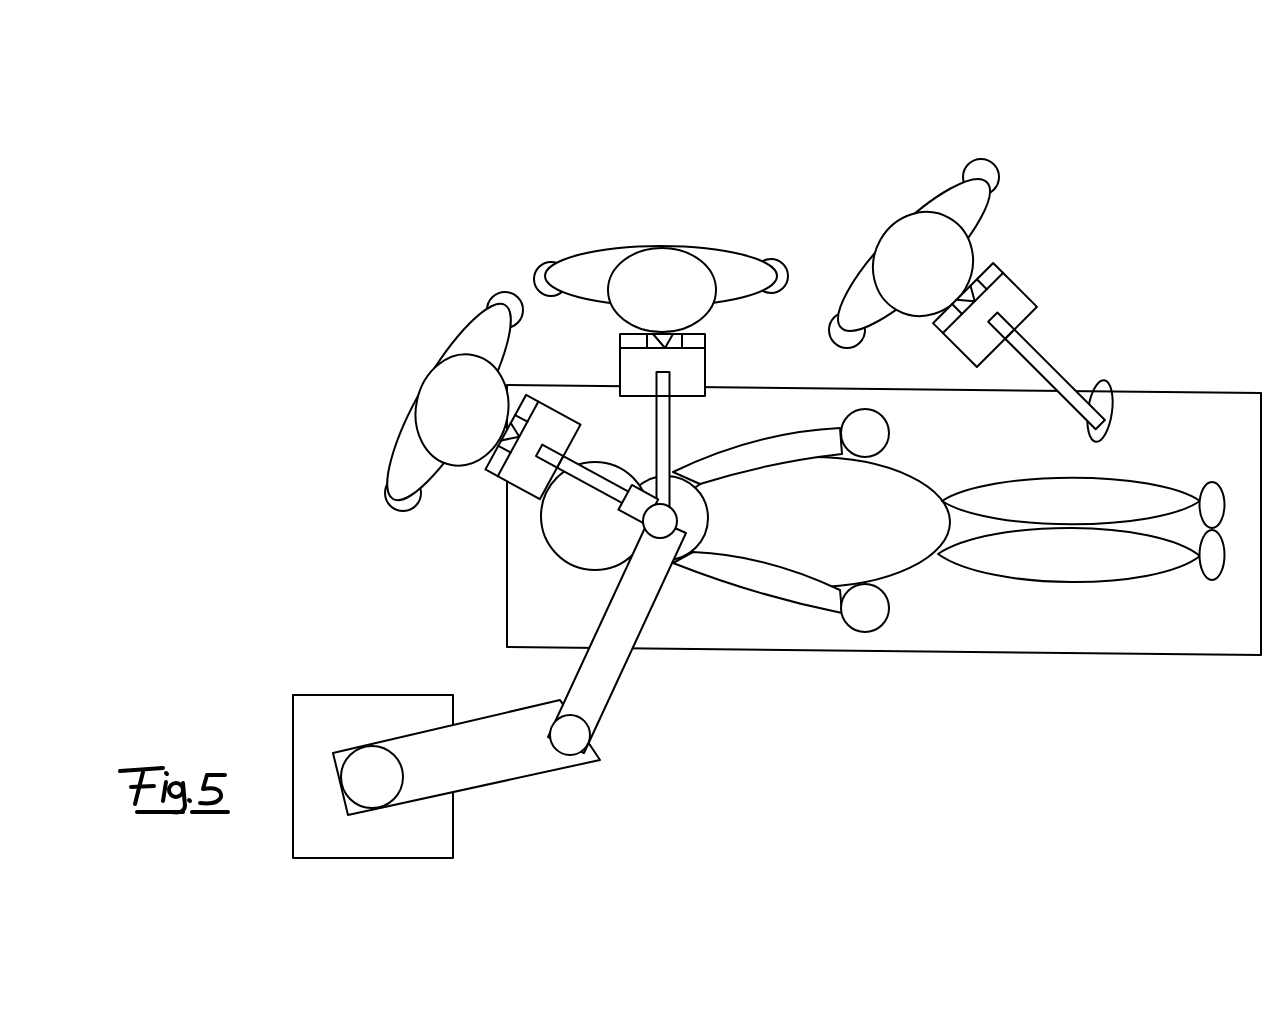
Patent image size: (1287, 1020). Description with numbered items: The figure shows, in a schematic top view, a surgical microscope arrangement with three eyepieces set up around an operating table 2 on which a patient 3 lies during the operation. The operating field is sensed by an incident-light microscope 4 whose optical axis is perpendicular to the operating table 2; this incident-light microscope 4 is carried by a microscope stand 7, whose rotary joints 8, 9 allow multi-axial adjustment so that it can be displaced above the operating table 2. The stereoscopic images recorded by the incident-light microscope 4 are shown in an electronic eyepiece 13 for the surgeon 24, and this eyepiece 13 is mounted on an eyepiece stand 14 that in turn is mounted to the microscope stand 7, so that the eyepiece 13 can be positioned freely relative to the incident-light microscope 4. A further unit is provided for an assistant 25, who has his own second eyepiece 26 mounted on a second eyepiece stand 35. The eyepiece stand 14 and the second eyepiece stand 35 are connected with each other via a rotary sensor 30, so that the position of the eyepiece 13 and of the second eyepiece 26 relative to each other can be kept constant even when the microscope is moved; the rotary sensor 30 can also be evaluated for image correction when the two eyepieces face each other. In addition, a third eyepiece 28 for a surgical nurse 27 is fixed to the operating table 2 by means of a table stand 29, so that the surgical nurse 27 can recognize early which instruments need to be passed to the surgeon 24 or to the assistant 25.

The operating table 2 is at (1188, 610).
The patient 3 is at (1065, 553).
The incident-light microscope 4 is at (692, 525).
The microscope stand 7 is at (312, 740).
The rotary joint 8 is at (365, 775).
The rotary joint 9 is at (575, 735).
The eyepiece 13 is at (645, 358).
The eyepiece stand 14 is at (663, 427).
The surgeon 24 is at (657, 267).
The assistant 25 is at (458, 395).
The second eyepiece 26 is at (518, 470).
The surgical nurse 27 is at (928, 263).
The third eyepiece 28 is at (1005, 302).
The table stand 29 is at (1053, 376).
The rotary sensor 30 is at (670, 535).
The second eyepiece stand 35 is at (547, 477).